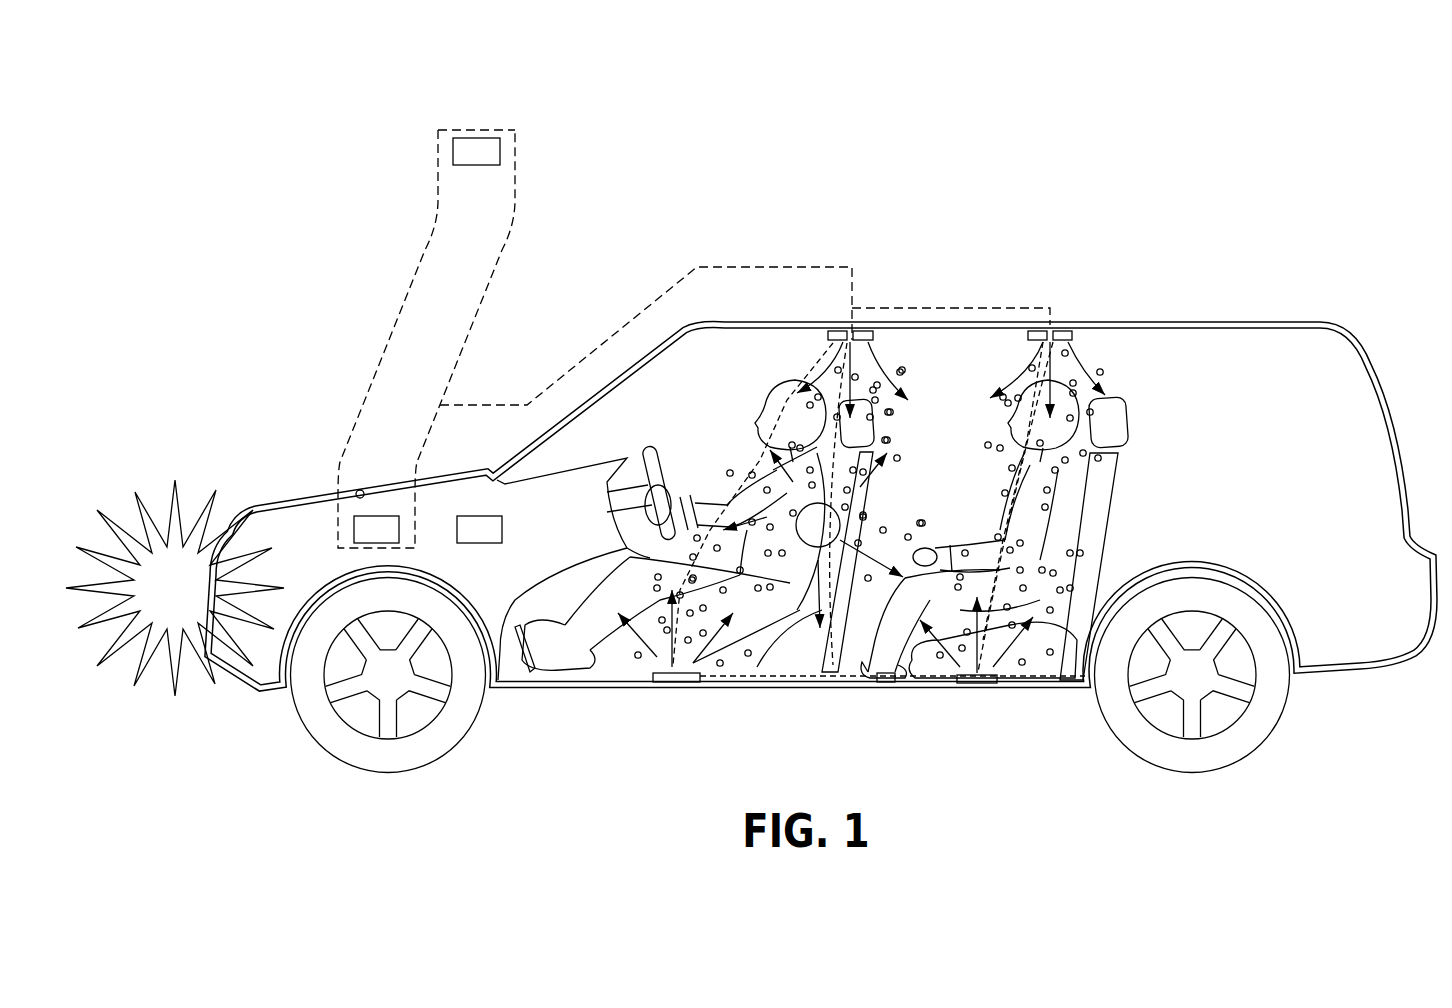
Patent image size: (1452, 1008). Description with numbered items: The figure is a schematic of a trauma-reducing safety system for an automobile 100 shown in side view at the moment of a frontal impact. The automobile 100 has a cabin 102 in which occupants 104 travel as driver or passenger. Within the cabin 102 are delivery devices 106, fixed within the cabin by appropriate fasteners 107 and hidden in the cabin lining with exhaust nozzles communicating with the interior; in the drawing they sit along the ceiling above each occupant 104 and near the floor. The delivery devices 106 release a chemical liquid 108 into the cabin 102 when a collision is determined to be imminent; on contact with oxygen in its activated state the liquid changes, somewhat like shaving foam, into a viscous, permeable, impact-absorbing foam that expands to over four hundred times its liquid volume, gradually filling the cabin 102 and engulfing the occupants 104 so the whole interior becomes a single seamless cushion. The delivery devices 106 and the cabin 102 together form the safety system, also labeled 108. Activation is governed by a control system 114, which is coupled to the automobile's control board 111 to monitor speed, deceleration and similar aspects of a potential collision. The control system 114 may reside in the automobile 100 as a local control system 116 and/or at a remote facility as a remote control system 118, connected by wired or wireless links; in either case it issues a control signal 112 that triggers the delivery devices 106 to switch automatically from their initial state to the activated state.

The automobile 100 is at (1318, 323).
The cabin 102 is at (642, 398).
The occupants 104 is at (787, 387).
The delivery devices 106 is at (1055, 325).
The fasteners 107 is at (1075, 325).
The chemical liquid 108 is at (1175, 278).
The automobile's control board 111 is at (480, 530).
The control signal 112 is at (852, 288).
The control system 114 is at (515, 157).
The local control system 116 is at (377, 530).
The remote control system 118 is at (475, 145).